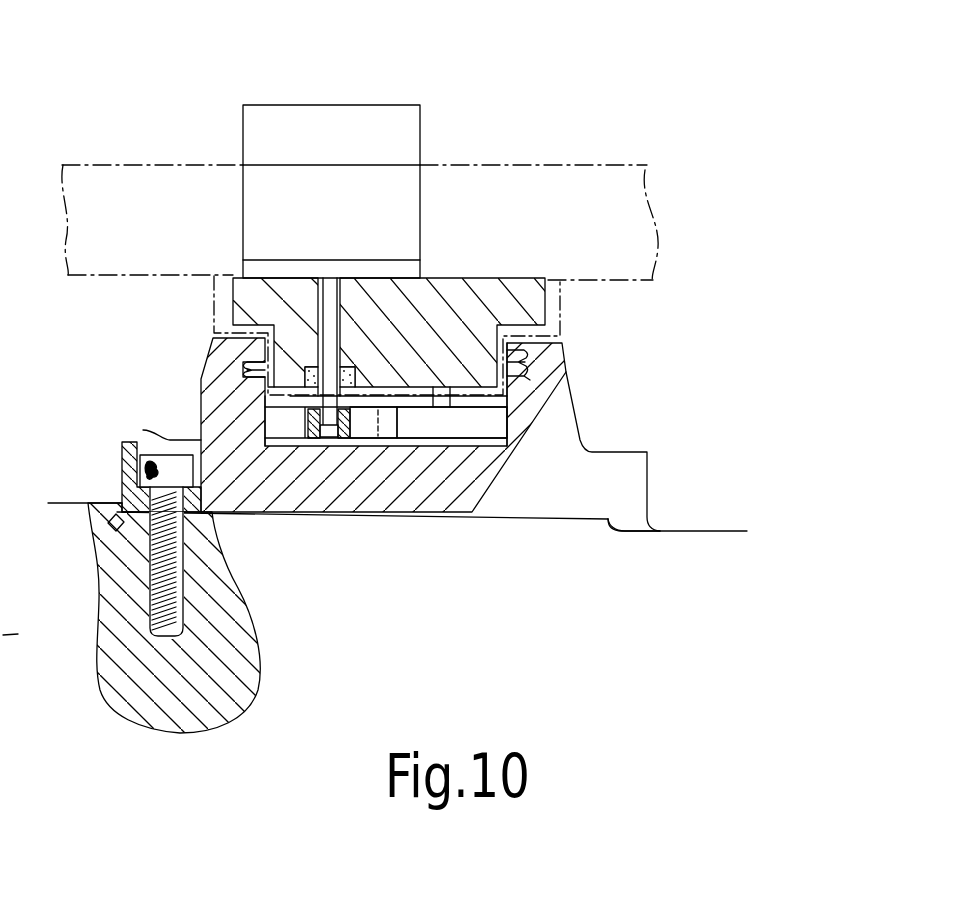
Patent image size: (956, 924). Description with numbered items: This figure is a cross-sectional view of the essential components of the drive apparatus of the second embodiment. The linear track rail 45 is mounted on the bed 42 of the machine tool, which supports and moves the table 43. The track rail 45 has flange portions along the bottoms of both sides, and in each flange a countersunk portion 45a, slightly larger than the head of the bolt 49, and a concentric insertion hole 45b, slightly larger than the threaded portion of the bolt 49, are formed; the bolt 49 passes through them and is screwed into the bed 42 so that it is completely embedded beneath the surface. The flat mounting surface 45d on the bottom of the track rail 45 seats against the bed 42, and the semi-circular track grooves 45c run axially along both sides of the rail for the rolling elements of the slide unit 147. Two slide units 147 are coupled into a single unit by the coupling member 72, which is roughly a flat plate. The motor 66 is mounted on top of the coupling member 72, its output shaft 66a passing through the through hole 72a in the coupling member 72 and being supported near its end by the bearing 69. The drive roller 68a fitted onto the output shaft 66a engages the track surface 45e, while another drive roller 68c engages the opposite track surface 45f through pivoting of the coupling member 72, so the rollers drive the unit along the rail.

The bed 42 is at (745, 548).
The table 43 is at (600, 200).
The linear track rail 45 is at (613, 446).
The countersunk portion 45a is at (135, 476).
The insertion hole 45b is at (157, 535).
The track groove 45c is at (240, 371).
The flat mounting surface 45d is at (660, 531).
The track surface 45e is at (312, 388).
The track surface 45f is at (525, 372).
The bolt 49 is at (165, 467).
The motor 66 is at (383, 105).
The output shaft 66a is at (363, 435).
The drive roller 68a is at (425, 428).
The drive roller 68c is at (500, 412).
The bearing 69 is at (330, 403).
The coupling member 72 is at (237, 277).
The through hole 72a is at (327, 308).
The slide unit 147 is at (566, 310).